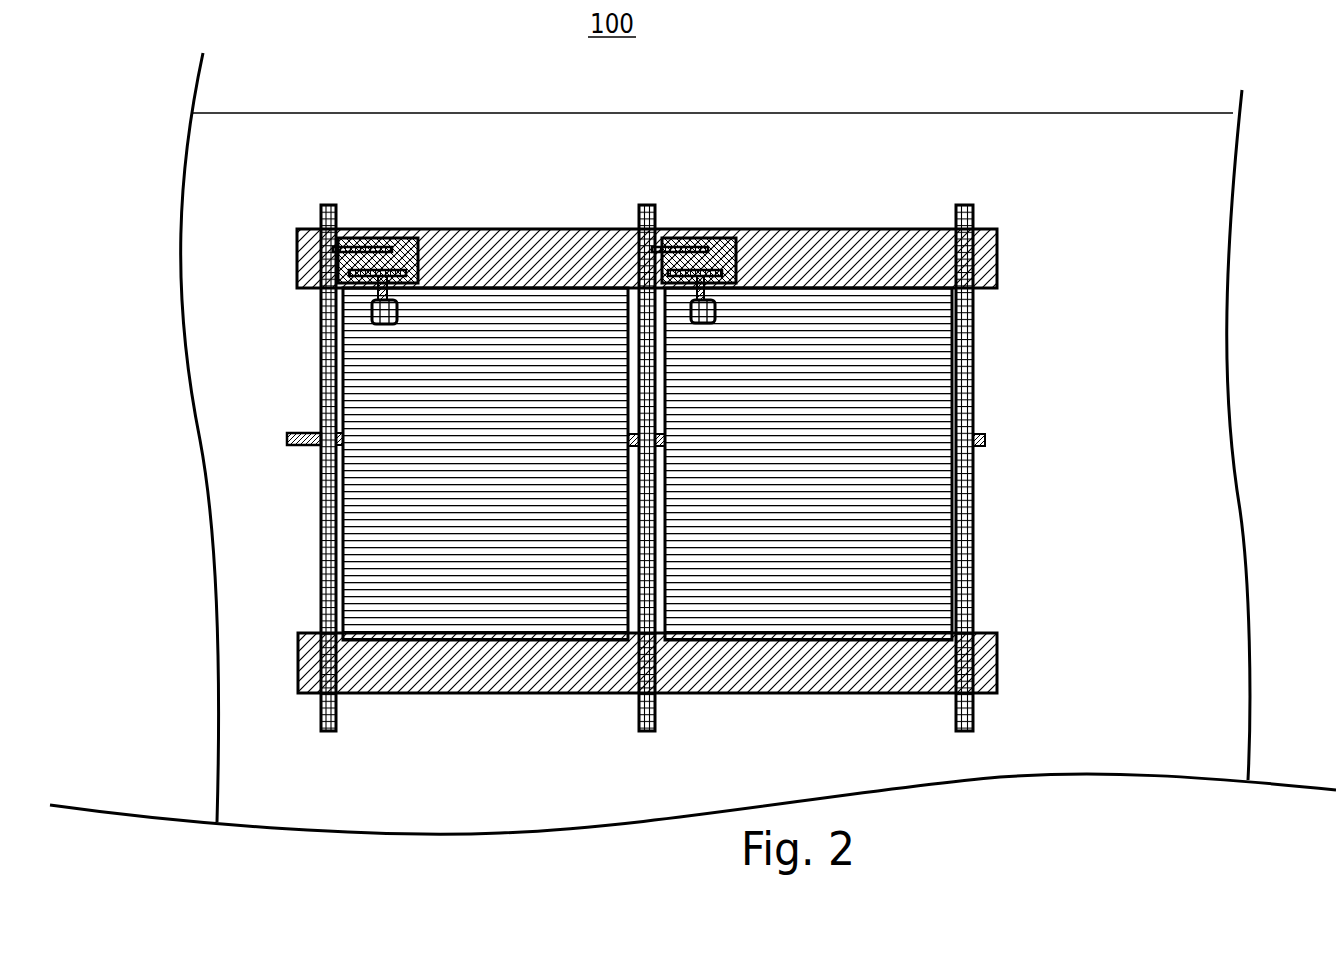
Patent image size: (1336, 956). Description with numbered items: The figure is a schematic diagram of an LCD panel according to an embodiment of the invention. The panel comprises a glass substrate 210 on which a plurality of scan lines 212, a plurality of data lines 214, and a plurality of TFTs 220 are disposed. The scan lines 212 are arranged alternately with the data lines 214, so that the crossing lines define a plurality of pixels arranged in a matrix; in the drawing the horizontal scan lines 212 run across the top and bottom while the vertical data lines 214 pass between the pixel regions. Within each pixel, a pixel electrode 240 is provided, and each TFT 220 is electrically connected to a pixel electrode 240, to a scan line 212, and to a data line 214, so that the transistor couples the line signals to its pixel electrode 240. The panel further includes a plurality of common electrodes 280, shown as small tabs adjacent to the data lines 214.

The roof surface line 210 is at (443, 113).
The frame cross member 212 is at (537, 275).
The rail 214 is at (321, 377).
The bracket clamp 220 is at (406, 243).
The solar panel 240 is at (367, 553).
The tab 280 is at (290, 433).